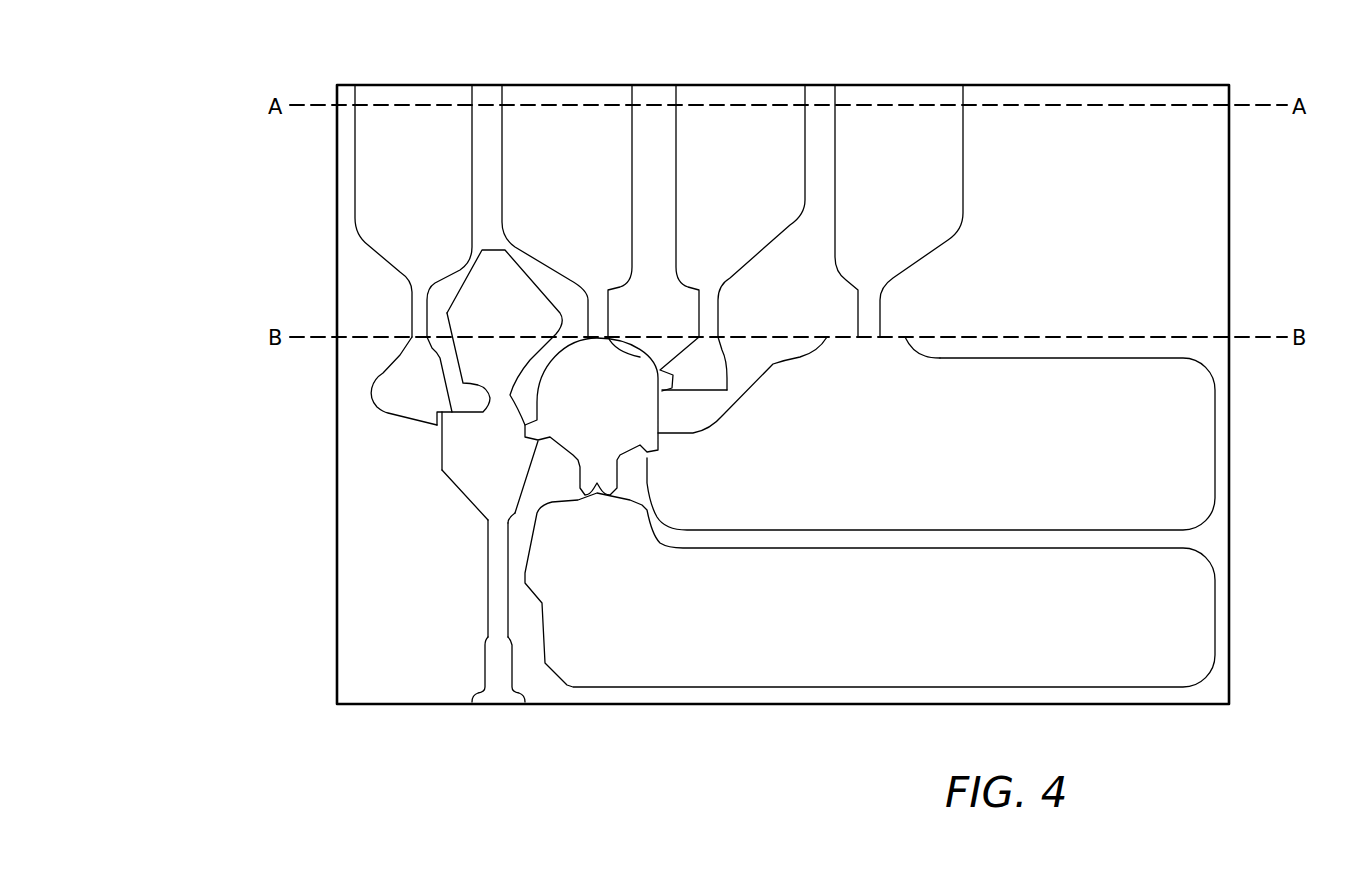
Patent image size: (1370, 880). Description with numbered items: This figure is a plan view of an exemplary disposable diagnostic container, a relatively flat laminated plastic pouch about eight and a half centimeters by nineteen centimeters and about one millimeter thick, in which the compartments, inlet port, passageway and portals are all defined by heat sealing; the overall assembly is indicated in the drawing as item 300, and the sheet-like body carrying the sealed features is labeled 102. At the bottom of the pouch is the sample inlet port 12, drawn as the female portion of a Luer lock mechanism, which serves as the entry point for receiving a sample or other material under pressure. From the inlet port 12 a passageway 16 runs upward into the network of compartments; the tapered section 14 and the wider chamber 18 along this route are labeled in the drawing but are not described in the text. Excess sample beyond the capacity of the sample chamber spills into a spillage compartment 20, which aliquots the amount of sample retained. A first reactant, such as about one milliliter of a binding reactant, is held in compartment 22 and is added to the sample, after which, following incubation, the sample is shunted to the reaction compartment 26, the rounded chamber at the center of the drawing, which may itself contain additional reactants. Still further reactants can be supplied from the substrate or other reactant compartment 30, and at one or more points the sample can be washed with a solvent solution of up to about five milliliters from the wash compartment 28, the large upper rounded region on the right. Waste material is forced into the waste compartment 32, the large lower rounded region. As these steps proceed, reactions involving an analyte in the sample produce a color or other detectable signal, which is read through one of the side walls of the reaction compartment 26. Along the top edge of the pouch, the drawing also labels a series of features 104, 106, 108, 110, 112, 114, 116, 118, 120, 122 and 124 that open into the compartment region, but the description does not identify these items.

The microfluidic device 300 is at (278, 717).
The substrate / chip body 102 is at (355, 165).
The channel wall 104 is at (491, 137).
The channel wall 106 is at (664, 137).
The channel wall 108 is at (823, 137).
The inlet channel 110 is at (430, 150).
The inlet channel 112 is at (604, 150).
The inlet channel 114 is at (777, 150).
The inlet channel 116 is at (935, 150).
The inlet port 118 is at (388, 85).
The inlet port 120 is at (567, 85).
The inlet port 122 is at (740, 85).
The inlet port 124 is at (898, 85).
The sample inlet port 12 is at (497, 706).
The tapered channel section 14 is at (467, 502).
The passageway 16 is at (495, 595).
The channel chamber 18 is at (465, 457).
The spillage compartment 20 is at (497, 373).
The compartment 22 is at (398, 381).
The reaction compartment 26 is at (598, 425).
The wash compartment 28 is at (1138, 465).
The reactant compartment 30 is at (703, 370).
The waste compartment 32 is at (832, 623).